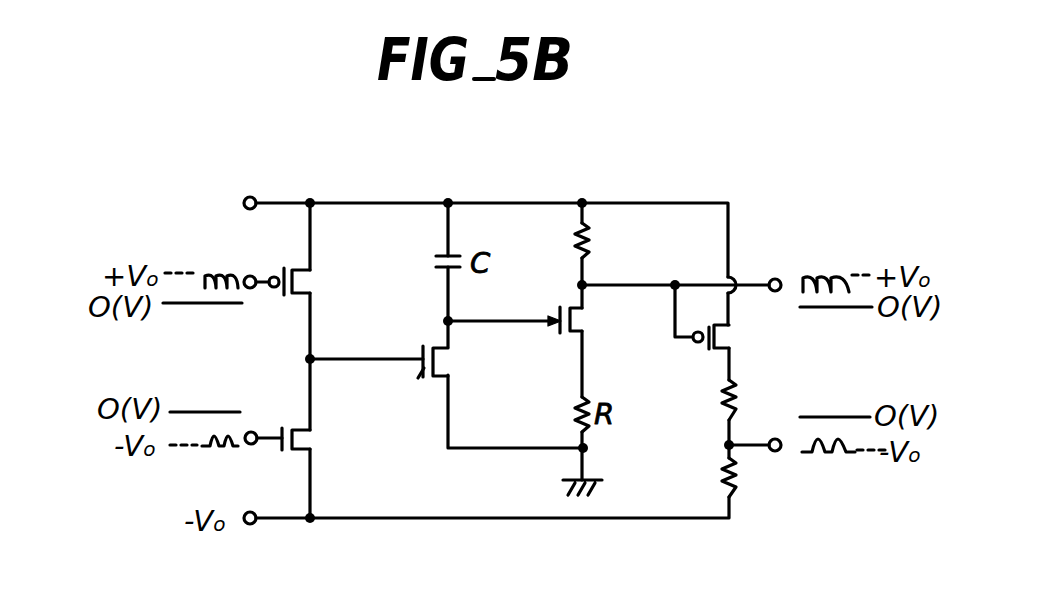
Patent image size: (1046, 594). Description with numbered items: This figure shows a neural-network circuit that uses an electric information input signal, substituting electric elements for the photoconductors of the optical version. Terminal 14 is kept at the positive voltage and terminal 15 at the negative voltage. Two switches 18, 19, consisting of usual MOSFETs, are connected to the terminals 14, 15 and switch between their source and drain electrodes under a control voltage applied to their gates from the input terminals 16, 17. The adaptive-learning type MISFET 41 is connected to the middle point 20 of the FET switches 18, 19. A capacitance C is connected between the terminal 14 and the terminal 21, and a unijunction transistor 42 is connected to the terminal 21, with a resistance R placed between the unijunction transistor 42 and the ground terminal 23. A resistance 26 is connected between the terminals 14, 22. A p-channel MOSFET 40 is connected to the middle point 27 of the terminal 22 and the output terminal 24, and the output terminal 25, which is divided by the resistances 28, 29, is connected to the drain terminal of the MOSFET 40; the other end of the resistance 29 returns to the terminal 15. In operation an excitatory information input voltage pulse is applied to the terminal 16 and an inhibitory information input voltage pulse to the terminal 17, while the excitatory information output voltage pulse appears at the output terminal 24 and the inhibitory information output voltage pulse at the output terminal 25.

The +V0 terminal 14 is at (252, 196).
The -V0 terminal 15 is at (250, 524).
The input terminal 16 is at (252, 288).
The input terminal 17 is at (254, 432).
The FET switch 18 is at (296, 283).
The FET switch 19 is at (296, 436).
The intermediate point 20 is at (313, 362).
The intermediate point 21 is at (451, 324).
The intermediate point 22 is at (584, 283).
The earth terminal 23 is at (588, 448).
The output terminal 24 is at (776, 279).
The output terminal 25 is at (776, 439).
The resistance 26 is at (578, 223).
The intermediate point 27 is at (676, 283).
The resistance 28 is at (722, 391).
The resistance 29 is at (734, 480).
The p-channel MOSFET 40 is at (717, 337).
The adaptive-learning type MISFET 41 is at (422, 350).
The unijunction transistor (UJT) 42 is at (574, 322).